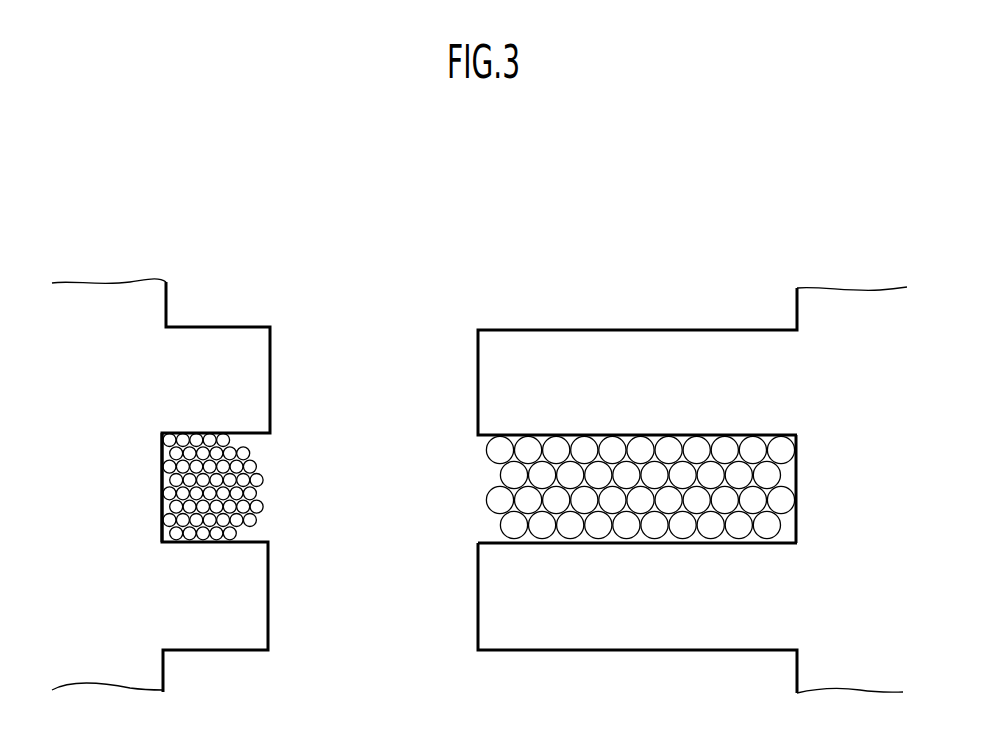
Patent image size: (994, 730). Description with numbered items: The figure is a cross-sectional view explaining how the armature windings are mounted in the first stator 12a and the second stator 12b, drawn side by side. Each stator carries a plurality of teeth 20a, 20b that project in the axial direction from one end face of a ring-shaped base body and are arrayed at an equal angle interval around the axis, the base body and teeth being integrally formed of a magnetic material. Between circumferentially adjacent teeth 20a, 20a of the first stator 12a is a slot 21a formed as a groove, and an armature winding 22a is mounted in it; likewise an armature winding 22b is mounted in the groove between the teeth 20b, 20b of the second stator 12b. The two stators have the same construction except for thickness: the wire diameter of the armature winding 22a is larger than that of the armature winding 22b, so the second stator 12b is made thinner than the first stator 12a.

The first stator 12a is at (703, 248).
The second stator 12b is at (221, 250).
The teeth of the first stator 20a is at (478, 340).
The teeth of the second stator 20b is at (245, 357).
The slot 21a is at (257, 536).
The armature winding of the first stator 22a is at (500, 475).
The armature winding of the second stator 22b is at (268, 474).